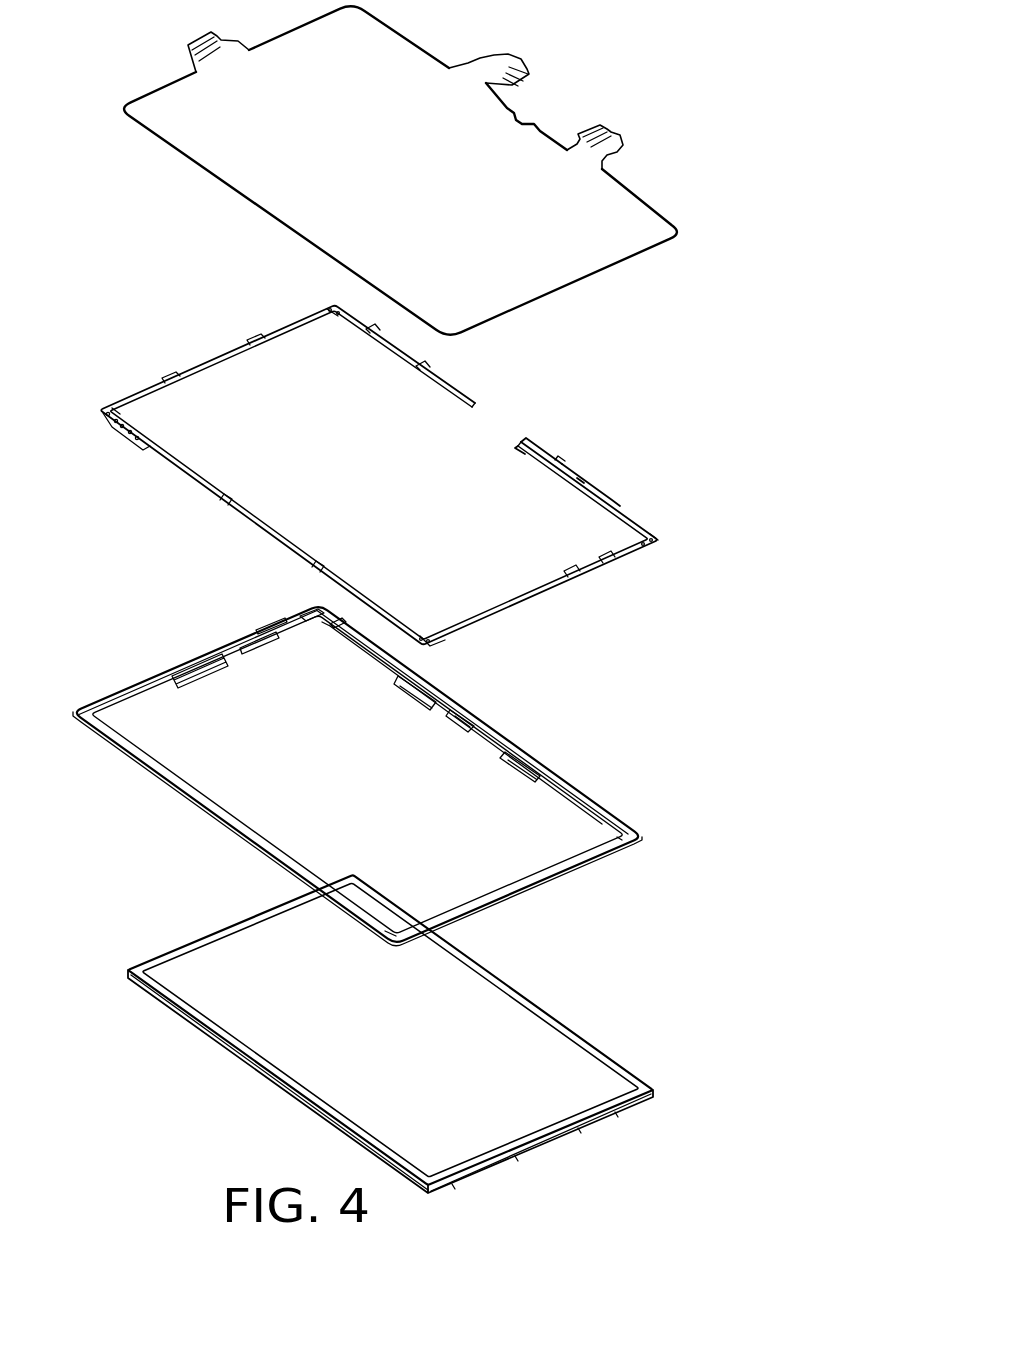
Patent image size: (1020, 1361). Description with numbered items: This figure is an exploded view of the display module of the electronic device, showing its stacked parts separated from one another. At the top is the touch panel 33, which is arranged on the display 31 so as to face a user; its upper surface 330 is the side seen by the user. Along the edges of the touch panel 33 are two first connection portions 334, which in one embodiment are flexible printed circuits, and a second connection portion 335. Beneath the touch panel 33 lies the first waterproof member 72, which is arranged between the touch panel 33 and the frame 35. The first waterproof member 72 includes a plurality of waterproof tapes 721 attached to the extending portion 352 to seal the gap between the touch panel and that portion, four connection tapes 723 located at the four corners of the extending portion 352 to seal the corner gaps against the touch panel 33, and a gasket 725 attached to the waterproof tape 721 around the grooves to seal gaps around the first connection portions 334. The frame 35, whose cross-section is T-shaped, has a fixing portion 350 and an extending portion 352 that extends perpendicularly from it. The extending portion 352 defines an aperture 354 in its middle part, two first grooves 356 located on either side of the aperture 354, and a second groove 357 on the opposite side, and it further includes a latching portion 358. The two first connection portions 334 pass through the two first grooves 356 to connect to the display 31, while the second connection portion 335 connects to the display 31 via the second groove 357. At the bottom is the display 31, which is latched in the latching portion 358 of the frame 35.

The touch panel 33 is at (391, 170).
The upper surface 330 is at (170, 107).
The first connection portion 334 is at (513, 65).
The second connection portion 335 is at (213, 49).
The first waterproof member 72 is at (425, 476).
The waterproof tape 721 is at (602, 497).
The connection tape 723 is at (653, 533).
The gasket 725 is at (552, 453).
The frame 35 is at (392, 776).
The fixing portion 350 is at (603, 802).
The extending portion 352 is at (608, 812).
The aperture 354 is at (483, 717).
The first groove 356 is at (523, 748).
The second groove 357 is at (187, 657).
The latching portion 358 is at (543, 817).
The display 31 is at (500, 1028).